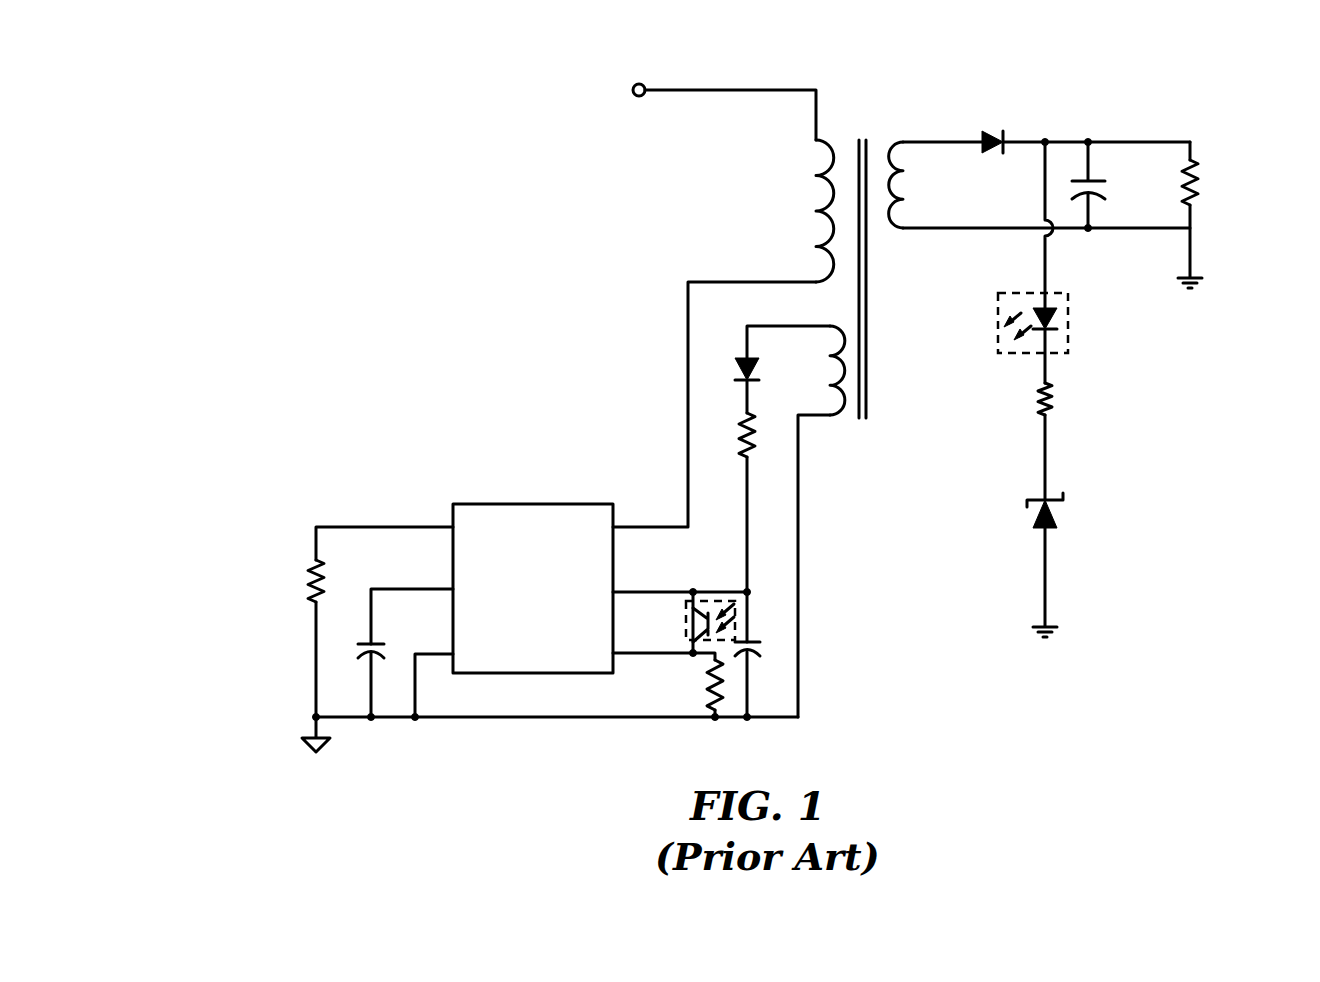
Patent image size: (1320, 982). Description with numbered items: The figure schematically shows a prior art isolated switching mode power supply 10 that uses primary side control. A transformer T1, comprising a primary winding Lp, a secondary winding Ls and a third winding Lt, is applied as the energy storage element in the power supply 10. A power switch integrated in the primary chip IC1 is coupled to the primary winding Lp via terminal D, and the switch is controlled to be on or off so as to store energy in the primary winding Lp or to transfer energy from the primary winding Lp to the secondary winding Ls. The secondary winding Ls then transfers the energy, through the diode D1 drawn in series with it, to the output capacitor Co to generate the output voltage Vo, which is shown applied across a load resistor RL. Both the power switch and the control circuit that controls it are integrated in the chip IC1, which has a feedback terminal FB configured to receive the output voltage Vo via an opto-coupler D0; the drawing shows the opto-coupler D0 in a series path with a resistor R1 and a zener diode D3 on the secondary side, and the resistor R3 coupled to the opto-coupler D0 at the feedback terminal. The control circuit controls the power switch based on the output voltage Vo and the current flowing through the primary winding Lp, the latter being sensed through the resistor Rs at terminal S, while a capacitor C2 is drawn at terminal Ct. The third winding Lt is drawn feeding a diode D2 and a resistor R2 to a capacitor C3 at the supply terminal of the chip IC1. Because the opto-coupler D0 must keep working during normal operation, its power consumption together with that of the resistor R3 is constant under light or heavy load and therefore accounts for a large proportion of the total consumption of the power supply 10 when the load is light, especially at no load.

The isolated switching mode power supply 10 is at (348, 137).
The transformer T1 is at (862, 260).
The primary winding Lp is at (809, 211).
The secondary winding Ls is at (913, 188).
The third winding Lt is at (819, 370).
The primary chip IC1 is at (533, 588).
The output rectifier diode D1 is at (1002, 129).
The auxiliary diode D2 is at (730, 385).
The zener diode D3 is at (1027, 512).
The opto-coupler D0 is at (1014, 338).
The resistor R1 is at (1062, 399).
The resistor R2 is at (729, 435).
The resistor R3 is at (697, 685).
The sense resistor Rs is at (299, 581).
The load resistor RL is at (1206, 173).
The output capacitor Co is at (1105, 185).
The timing capacitor C2 is at (358, 636).
The Vcc capacitor C3 is at (765, 654).